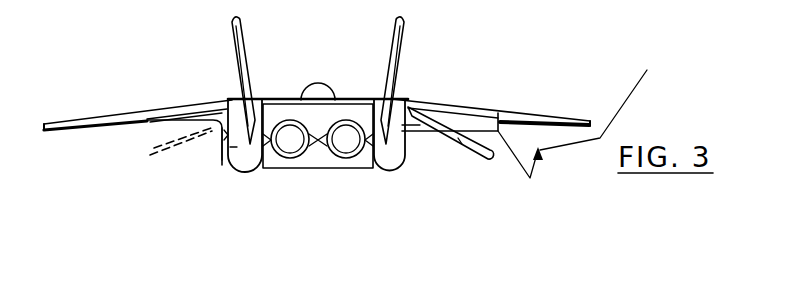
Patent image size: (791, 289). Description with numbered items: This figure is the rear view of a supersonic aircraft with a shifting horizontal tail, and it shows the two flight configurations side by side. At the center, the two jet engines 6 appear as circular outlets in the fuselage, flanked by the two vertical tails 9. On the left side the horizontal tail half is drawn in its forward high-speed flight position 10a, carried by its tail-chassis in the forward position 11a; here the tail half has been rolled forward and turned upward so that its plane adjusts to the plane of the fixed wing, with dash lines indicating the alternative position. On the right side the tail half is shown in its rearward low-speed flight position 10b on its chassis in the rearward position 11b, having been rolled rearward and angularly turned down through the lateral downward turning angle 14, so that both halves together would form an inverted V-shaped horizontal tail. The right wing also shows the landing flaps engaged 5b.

The vertical tails 9 is at (242, 60).
The jet engines 6 is at (341, 154).
The horizontal tail halves in their forward high-speed flight position 10a is at (152, 120).
The chassis in their forward high-speed flight positions 11a is at (222, 133).
The tail halves in their rearward low-speed flight position 10b is at (465, 131).
The chassis in their rearward low-speed flight positions 11b is at (417, 143).
The landing flaps engaged 5b is at (475, 122).
The lateral downward turning angles of the horizontal tail halves 14 is at (605, 100).